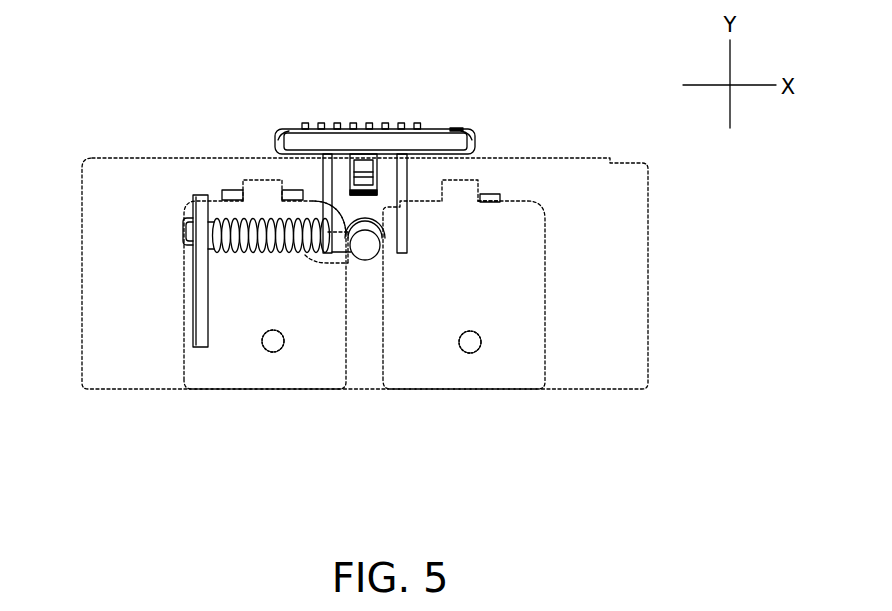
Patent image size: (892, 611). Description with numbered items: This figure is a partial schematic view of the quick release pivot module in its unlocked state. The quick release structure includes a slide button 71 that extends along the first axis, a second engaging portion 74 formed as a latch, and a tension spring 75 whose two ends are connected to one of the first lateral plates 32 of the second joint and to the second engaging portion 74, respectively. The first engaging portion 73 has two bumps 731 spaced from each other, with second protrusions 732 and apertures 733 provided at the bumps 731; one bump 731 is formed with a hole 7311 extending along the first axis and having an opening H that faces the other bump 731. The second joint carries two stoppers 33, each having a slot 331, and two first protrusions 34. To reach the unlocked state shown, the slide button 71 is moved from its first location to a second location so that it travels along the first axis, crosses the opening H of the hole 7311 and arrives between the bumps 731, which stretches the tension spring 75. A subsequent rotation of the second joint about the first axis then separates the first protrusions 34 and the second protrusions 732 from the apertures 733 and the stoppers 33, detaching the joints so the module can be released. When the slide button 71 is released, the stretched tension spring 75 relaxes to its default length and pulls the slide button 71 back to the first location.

The slide button 71 is at (427, 128).
The first engaging portion 73 is at (558, 272).
The bump 731 is at (183, 368).
The second protrusion 732 is at (262, 190).
The hole 7311 is at (322, 264).
The aperture 733 is at (268, 353).
The second engaging portion 74 is at (368, 250).
The tension spring 75 is at (252, 254).
The first lateral plate 32 is at (197, 197).
The stopper 33 is at (232, 192).
The slot 331 is at (481, 202).
The first protrusion 34 is at (276, 344).
The opening H is at (352, 263).